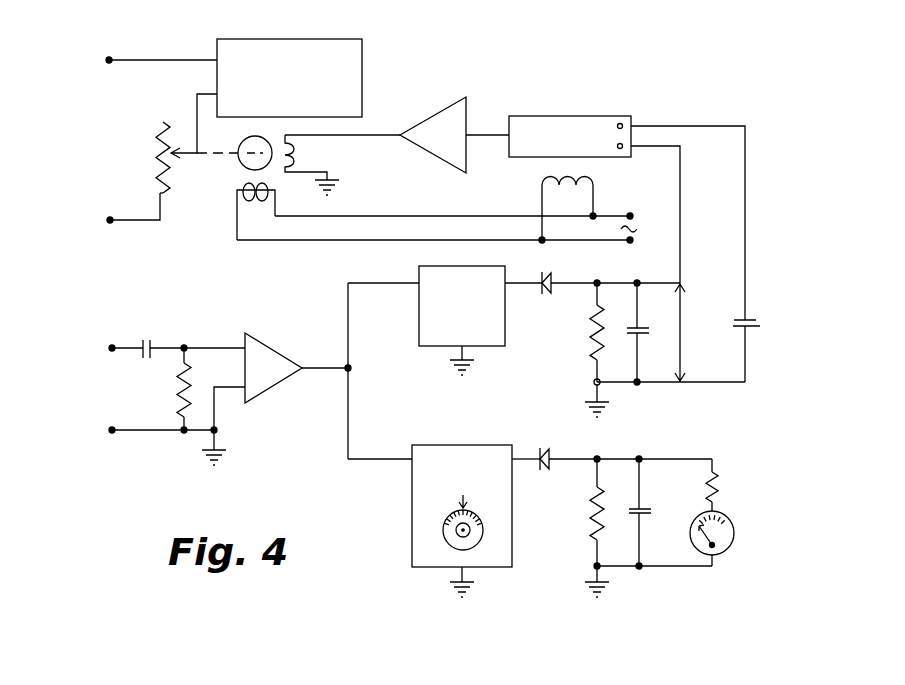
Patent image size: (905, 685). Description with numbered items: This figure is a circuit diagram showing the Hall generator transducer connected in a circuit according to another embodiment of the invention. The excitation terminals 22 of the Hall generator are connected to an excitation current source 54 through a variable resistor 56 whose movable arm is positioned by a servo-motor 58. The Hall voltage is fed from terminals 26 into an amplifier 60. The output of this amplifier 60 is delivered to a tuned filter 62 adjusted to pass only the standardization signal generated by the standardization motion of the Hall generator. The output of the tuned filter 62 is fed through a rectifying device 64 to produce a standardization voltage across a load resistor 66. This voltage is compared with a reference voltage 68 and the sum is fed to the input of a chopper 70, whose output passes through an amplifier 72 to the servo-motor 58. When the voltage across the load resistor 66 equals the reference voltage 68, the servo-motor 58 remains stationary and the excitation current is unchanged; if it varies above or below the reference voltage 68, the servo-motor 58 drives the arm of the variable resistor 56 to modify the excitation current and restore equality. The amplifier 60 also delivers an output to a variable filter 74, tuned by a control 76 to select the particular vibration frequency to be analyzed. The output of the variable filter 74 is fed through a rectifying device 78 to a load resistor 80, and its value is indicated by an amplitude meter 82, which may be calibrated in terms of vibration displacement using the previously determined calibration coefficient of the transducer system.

The excitation terminals 22 is at (109, 60).
The terminals 26 is at (112, 348).
The excitation current source 54 is at (298, 39).
The variable resistor 56 is at (157, 172).
The servo-motor 58 is at (242, 165).
The amplifier 60 is at (275, 355).
The tuned filter 62 is at (419, 320).
The rectifying device 64 is at (549, 291).
The load resistor 66 is at (593, 357).
The reference voltage 68 is at (750, 318).
The chopper 70 is at (592, 116).
The amplifier 72 is at (438, 113).
The variable filter 74 is at (471, 445).
The control 76 is at (443, 532).
The rectifying device 78 is at (546, 450).
The load resistor 80 is at (593, 520).
The amplitude meter 82 is at (735, 525).